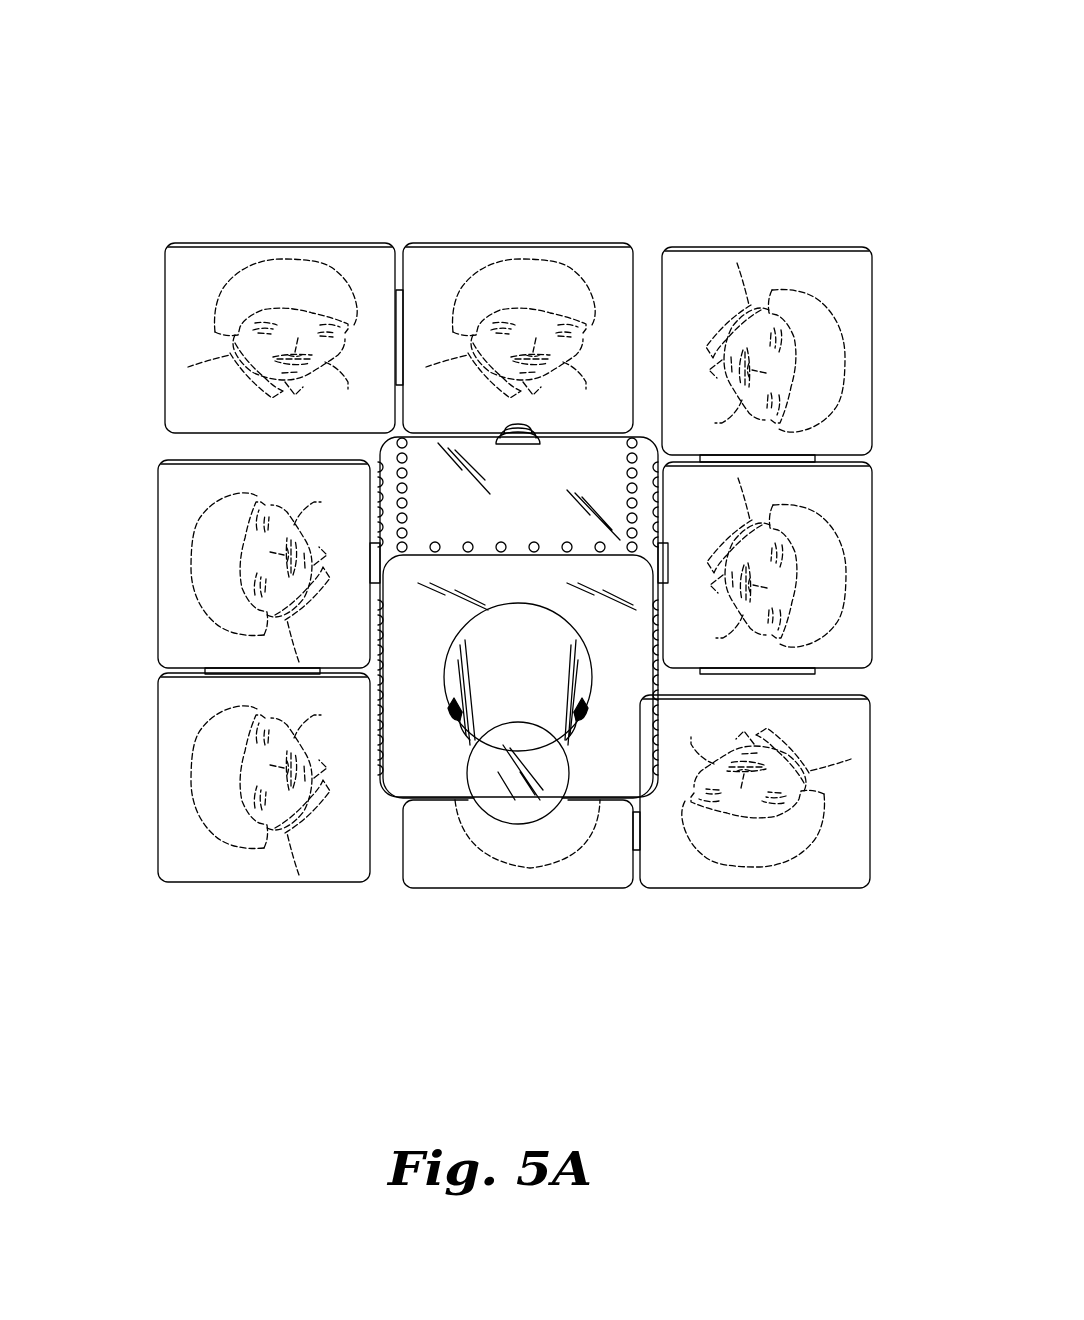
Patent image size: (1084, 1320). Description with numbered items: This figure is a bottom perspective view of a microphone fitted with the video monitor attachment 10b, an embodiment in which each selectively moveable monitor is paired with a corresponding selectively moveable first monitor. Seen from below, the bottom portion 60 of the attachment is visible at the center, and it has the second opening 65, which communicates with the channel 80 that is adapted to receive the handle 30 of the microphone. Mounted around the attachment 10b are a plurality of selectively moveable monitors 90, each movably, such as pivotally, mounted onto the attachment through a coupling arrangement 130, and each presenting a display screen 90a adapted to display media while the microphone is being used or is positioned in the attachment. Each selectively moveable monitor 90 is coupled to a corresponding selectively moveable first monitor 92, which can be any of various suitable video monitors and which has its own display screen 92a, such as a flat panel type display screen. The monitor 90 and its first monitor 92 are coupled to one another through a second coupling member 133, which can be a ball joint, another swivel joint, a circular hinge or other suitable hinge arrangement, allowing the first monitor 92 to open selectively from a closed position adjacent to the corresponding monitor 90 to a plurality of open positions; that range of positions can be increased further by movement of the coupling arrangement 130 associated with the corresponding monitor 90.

The video monitor attachment 10b is at (185, 100).
The handle 30 is at (503, 793).
The bottom portion 60 is at (430, 718).
The second opening 65 is at (452, 716).
The channel 80 is at (583, 716).
The selectively moveable monitor 90 is at (525, 243).
The display screen 90a is at (605, 270).
The selectively moveable first monitor 92 is at (160, 342).
The display screen 92a is at (360, 268).
The coupling arrangement 130 is at (518, 448).
The second coupling member 133 is at (402, 378).